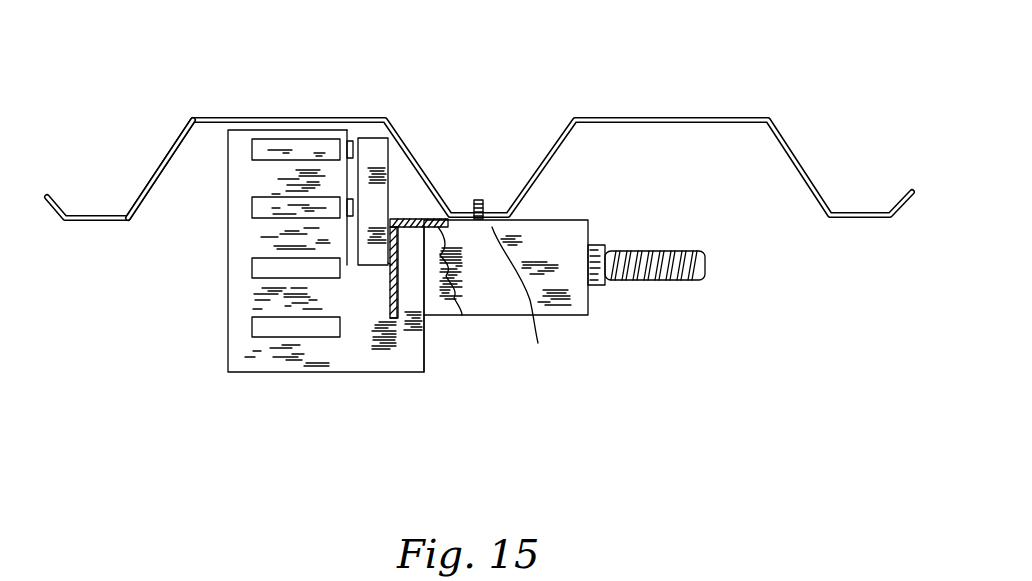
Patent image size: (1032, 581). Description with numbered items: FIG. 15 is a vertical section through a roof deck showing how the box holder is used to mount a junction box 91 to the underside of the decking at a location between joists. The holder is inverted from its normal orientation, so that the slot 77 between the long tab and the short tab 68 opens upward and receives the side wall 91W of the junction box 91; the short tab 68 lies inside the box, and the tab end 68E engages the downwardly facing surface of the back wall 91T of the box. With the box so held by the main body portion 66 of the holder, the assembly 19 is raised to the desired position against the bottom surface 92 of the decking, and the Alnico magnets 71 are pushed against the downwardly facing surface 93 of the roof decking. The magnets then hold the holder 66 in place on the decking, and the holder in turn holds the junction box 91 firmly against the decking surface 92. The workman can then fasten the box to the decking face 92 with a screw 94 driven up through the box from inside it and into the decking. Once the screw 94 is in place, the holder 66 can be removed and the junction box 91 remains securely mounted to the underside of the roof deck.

The junction assembly 19 is at (487, 116).
The main body portion 66 is at (363, 308).
The short tab 68 is at (414, 305).
The tab end 68E is at (416, 220).
The Alnico magnets 71 is at (273, 118).
The slot 77 is at (393, 320).
The junction box 91 is at (578, 228).
The back wall 91T is at (462, 315).
The side wall 91W is at (392, 265).
The bottom surface 92 is at (519, 296).
The downwardly facing surface 93 is at (212, 124).
The screw 94 is at (482, 200).